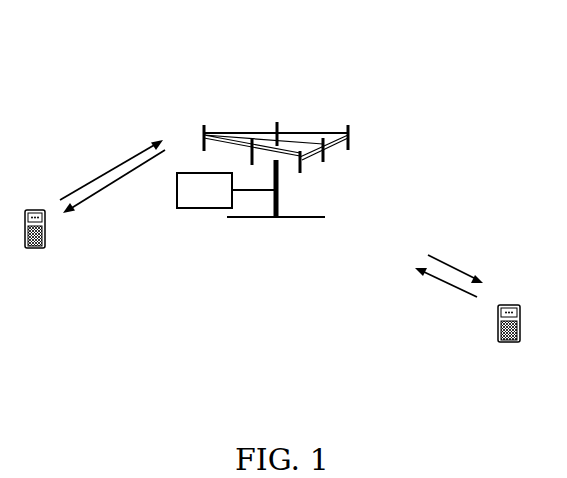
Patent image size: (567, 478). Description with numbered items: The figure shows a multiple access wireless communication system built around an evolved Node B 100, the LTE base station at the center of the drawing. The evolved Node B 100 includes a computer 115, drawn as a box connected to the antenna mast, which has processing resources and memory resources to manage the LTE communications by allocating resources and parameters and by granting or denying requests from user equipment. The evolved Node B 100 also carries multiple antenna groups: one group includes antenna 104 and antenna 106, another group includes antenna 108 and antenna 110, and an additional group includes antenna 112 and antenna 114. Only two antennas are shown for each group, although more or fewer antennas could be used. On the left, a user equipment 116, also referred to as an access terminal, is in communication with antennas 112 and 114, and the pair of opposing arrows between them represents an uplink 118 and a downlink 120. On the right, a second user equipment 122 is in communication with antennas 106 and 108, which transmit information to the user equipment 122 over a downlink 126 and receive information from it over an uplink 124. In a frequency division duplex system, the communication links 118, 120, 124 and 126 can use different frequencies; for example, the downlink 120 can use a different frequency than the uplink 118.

The evolved Node B 100 is at (258, 217).
The antenna 104 is at (302, 172).
The antenna 106 is at (323, 162).
The antenna 108 is at (348, 150).
The antenna 110 is at (277, 122).
The antenna 112 is at (205, 130).
The antenna 114 is at (252, 163).
The computer 115 is at (195, 208).
The user equipment 116 is at (37, 212).
The uplink 118 is at (110, 171).
The downlink 120 is at (117, 178).
The user equipment 122 is at (510, 305).
The uplink 124 is at (437, 281).
The downlink 126 is at (461, 274).